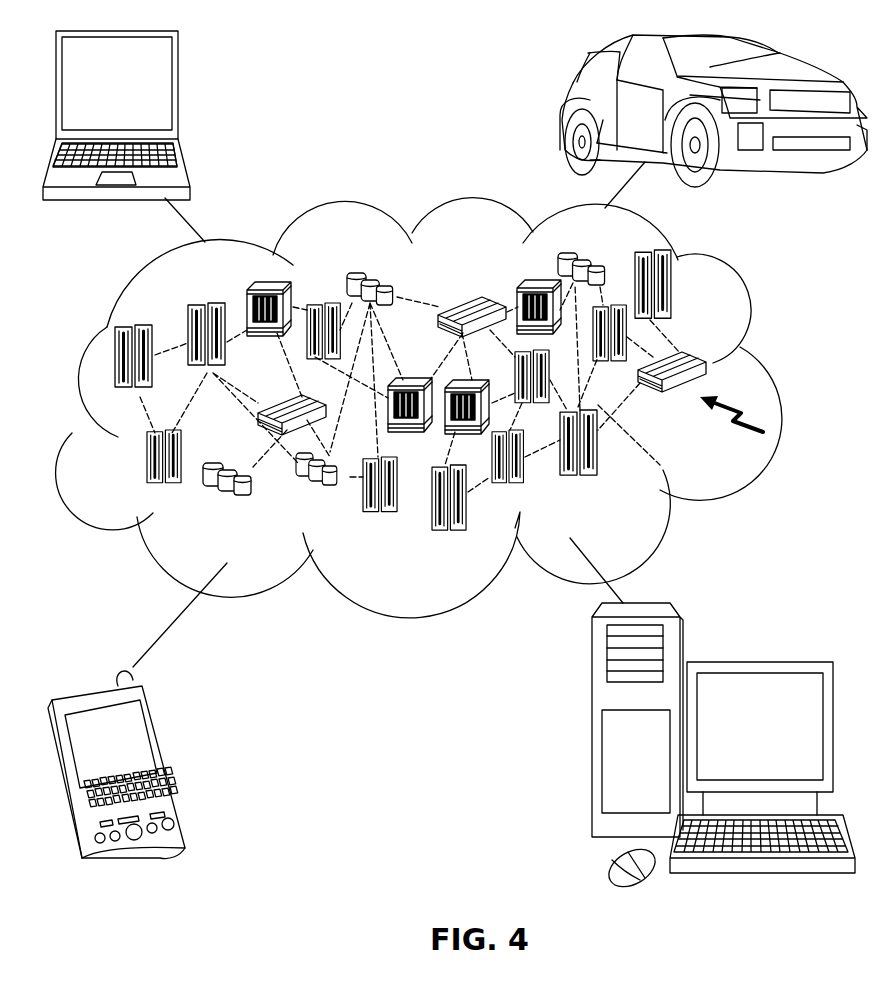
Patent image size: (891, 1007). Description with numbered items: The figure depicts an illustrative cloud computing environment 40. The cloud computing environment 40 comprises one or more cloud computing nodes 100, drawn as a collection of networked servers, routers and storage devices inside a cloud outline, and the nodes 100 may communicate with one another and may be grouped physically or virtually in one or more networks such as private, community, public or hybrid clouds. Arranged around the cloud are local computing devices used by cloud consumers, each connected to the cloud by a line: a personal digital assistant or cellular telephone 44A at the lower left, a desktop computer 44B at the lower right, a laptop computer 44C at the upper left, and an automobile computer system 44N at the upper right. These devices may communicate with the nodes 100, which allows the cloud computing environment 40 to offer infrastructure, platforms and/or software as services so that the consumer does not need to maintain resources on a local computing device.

The cloud computing environment 40 is at (760, 372).
The cloud computing nodes 100 is at (759, 420).
The personal digital assistant (PDA) or cellular telephone 44A is at (167, 757).
The desktop computer 44B is at (757, 661).
The laptop computer 44C is at (178, 93).
The automobile computer system 44N is at (565, 108).